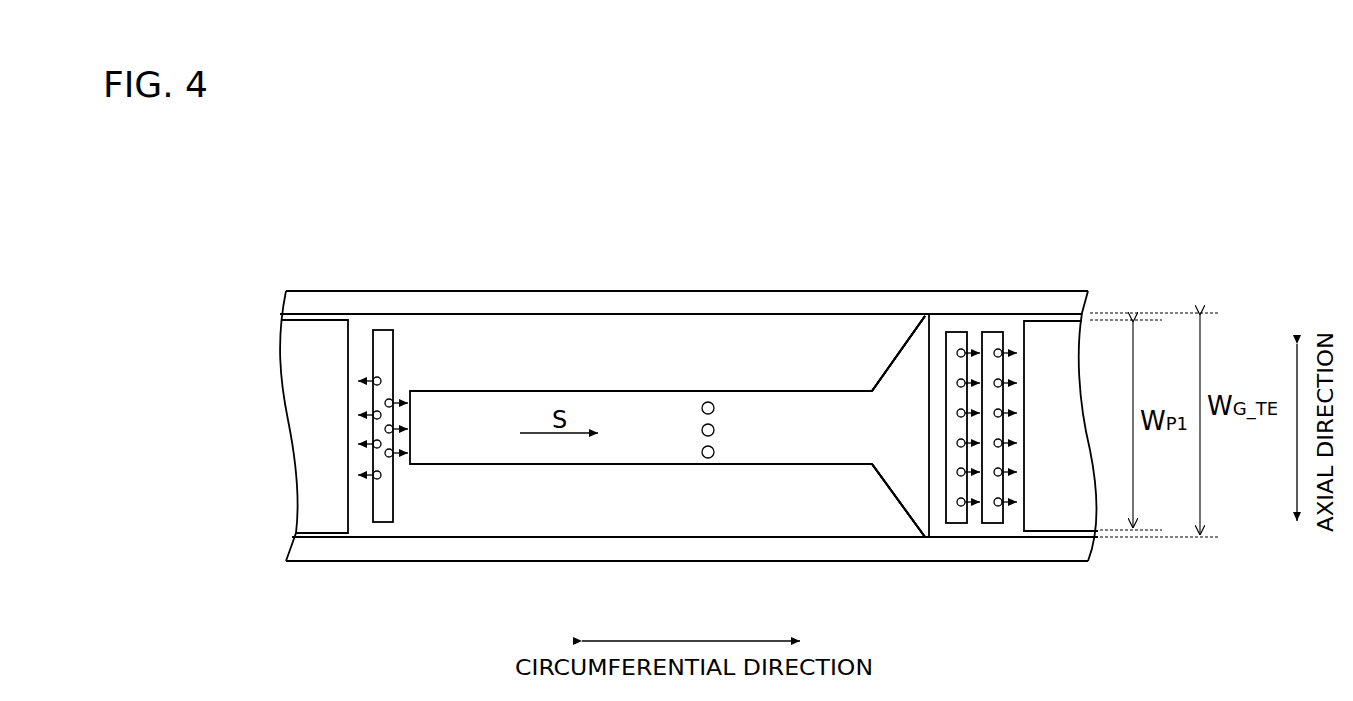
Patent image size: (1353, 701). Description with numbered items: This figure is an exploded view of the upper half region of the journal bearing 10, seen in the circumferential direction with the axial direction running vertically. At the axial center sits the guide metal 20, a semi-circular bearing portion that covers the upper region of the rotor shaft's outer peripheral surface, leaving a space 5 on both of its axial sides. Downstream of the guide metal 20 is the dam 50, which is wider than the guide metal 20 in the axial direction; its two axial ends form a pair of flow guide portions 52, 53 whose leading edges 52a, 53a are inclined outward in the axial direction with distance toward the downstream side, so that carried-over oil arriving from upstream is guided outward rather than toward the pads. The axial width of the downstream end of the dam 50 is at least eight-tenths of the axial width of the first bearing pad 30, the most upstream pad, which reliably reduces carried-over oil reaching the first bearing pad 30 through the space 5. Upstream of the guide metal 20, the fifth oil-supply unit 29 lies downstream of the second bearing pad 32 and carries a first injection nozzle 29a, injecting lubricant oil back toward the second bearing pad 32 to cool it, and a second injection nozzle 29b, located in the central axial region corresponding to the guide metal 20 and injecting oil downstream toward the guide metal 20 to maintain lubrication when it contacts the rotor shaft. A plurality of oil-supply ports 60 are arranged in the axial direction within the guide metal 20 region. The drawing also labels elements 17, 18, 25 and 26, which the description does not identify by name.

The journal bearing 10 is at (993, 223).
The space 5 is at (558, 335).
The leading end of platform 17 is at (497, 303).
The trailing end of platform 18 is at (503, 557).
The guide metal 20 is at (622, 403).
The first cooling hole row 25 is at (953, 332).
The second cooling hole row 26 is at (995, 332).
The fifth oil-supply unit 29 is at (388, 427).
The first injection nozzle 29a is at (377, 479).
The second injection nozzle 29b is at (391, 457).
The first bearing pad 30 is at (1050, 520).
The second bearing pad 32 is at (317, 508).
The dam 50 is at (902, 407).
The flow guide portion 52 is at (917, 343).
The leading edge 52a is at (893, 357).
The flow guide portion 53 is at (913, 505).
The leading edge 53a is at (888, 492).
The oil-supply port 60 is at (705, 393).